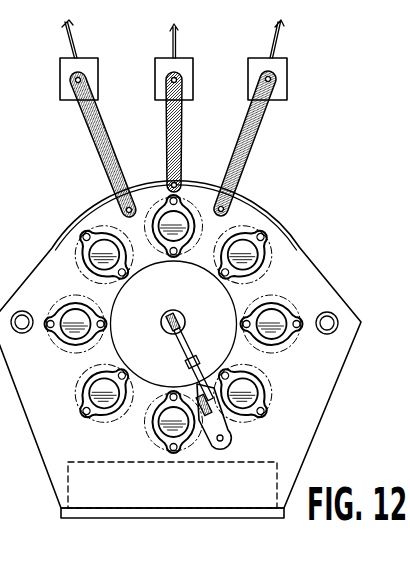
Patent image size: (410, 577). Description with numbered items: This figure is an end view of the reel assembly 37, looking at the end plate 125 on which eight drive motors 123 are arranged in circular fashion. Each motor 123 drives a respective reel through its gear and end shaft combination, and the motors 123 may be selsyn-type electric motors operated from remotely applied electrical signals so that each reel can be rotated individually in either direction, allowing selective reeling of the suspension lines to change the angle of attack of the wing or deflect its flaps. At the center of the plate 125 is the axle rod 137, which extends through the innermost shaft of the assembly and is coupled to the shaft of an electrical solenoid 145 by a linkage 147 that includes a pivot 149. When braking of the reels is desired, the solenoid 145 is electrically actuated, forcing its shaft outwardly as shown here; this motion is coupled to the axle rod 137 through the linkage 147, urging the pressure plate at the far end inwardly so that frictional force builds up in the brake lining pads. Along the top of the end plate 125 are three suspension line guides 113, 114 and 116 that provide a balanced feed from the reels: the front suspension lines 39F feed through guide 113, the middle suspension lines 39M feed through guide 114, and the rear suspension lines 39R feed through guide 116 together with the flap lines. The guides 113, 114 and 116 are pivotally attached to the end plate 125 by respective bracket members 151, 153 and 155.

The reel assembly 37 is at (306, 225).
The end plate 125 is at (318, 430).
The drive motor 123 is at (180, 224).
The axle rod 137 is at (181, 316).
The linkage 147 is at (196, 335).
The pivot 149 is at (194, 360).
The electrical solenoid 145 is at (224, 437).
The suspension line guide 116 is at (99, 70).
The suspension line guide 114 is at (194, 69).
The suspension line guide 113 is at (288, 68).
The bracket member 155 is at (110, 138).
The bracket member 153 is at (183, 130).
The bracket member 151 is at (263, 112).
The rear suspension lines 39R is at (77, 38).
The middle suspension lines 39M is at (178, 30).
The front suspension lines 39F is at (284, 26).